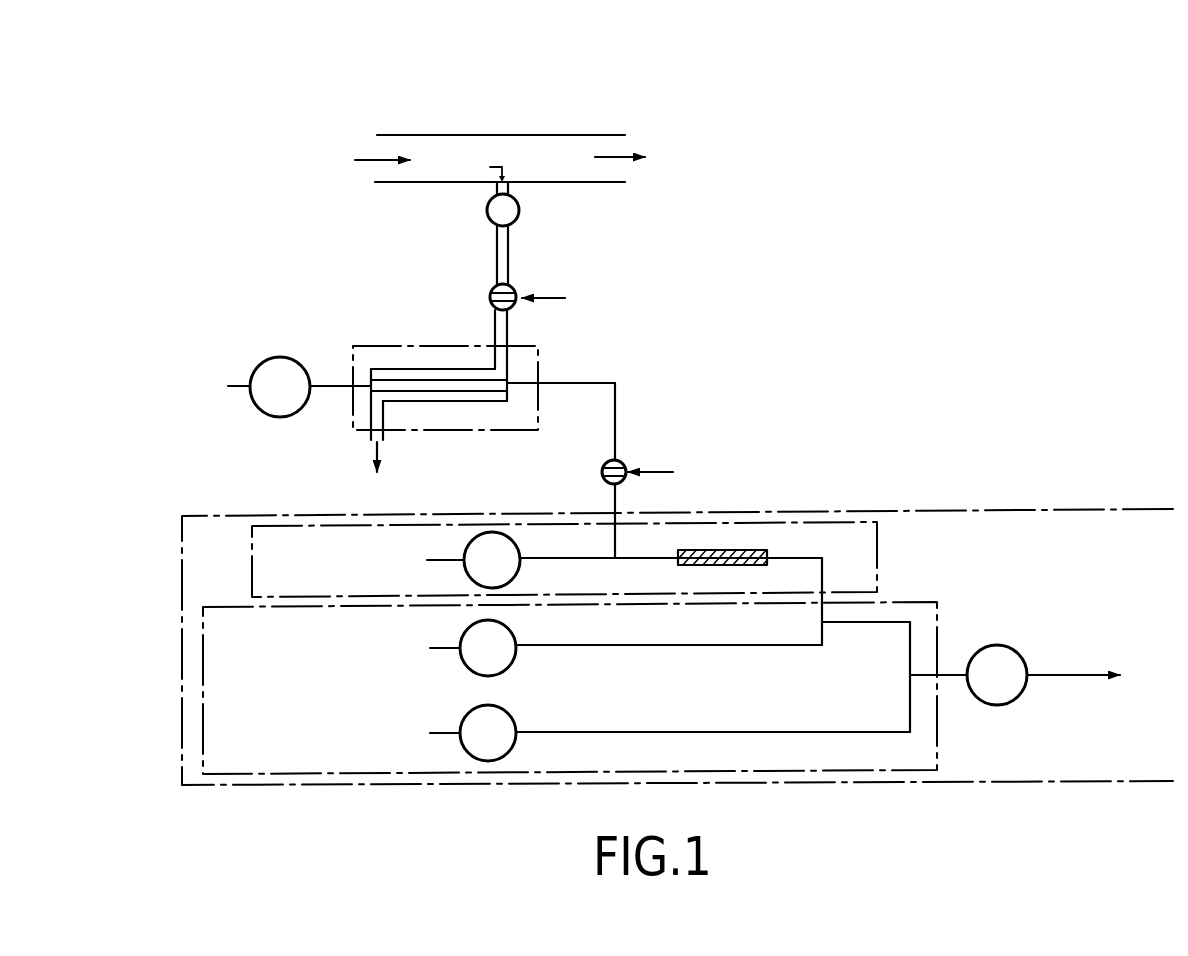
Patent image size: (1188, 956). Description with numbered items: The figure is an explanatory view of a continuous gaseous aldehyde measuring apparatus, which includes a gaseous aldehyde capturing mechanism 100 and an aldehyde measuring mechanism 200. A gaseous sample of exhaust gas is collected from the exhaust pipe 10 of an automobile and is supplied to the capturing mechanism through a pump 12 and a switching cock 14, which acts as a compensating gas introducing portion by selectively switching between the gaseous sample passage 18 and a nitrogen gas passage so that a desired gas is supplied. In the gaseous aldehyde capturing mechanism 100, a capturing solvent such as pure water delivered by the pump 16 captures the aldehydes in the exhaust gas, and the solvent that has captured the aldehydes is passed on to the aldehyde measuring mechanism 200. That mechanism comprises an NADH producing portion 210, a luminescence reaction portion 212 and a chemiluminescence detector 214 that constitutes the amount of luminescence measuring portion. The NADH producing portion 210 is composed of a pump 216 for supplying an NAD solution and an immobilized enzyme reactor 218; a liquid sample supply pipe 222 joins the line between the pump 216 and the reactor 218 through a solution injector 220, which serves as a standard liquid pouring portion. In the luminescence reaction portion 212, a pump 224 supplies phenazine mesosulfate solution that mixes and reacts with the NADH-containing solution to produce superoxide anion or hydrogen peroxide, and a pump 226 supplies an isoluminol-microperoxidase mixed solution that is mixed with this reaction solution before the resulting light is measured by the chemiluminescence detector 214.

The exhaust pipe 10 is at (618, 184).
The pump 12 is at (487, 212).
The switching cock 14 is at (490, 297).
The pump 16 is at (280, 356).
The gaseous sample passage 18 is at (510, 258).
The gaseous aldehyde capturing mechanism 100 is at (540, 352).
The aldehyde measuring mechanism 200 is at (777, 509).
The NADH producing portion 210 is at (877, 548).
The luminescence reaction portion 212 is at (937, 745).
The chemiluminescence detector 214 is at (997, 645).
The pump 216 is at (520, 549).
The immobilized enzyme reactor 218 is at (756, 550).
The solution injector 220 is at (623, 463).
The liquid sample supply pipe 222 is at (611, 432).
The pump 224 is at (517, 658).
The pump 226 is at (517, 718).